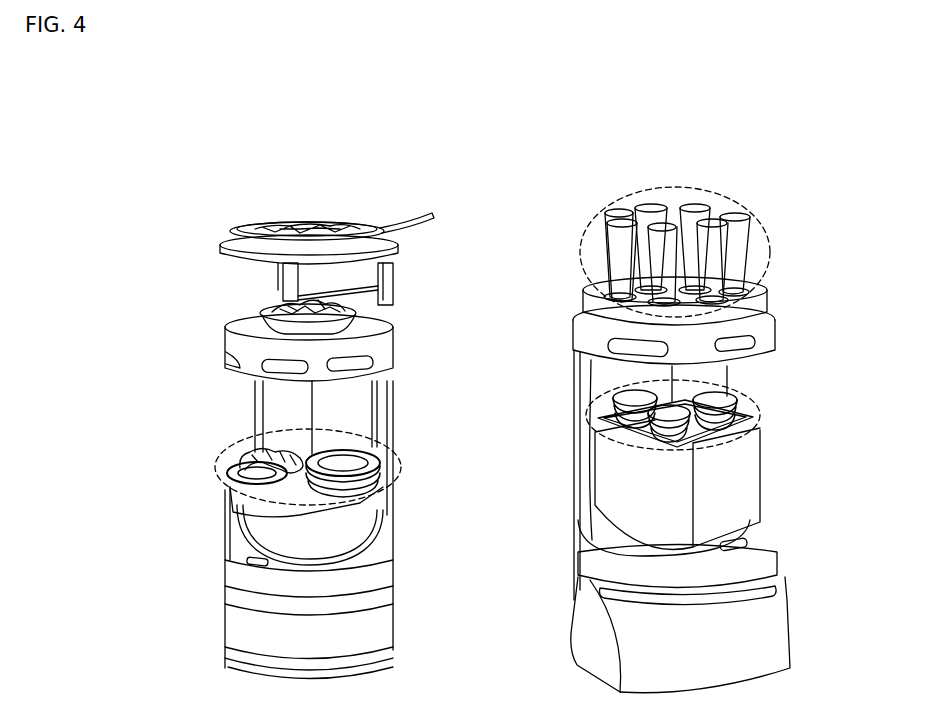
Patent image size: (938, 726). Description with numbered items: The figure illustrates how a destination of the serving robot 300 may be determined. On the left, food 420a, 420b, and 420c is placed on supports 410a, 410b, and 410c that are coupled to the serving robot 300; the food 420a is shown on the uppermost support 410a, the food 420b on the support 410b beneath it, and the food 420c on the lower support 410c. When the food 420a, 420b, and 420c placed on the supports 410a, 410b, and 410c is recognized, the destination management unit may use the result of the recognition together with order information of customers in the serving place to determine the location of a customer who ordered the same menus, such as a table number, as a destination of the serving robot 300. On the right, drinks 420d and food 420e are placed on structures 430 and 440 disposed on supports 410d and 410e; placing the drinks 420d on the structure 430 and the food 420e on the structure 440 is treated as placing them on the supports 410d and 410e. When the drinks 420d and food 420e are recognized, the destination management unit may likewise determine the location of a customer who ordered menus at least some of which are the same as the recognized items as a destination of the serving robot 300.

The serving robot 300 is at (161, 106).
The support 410a is at (230, 232).
The food 420a is at (330, 222).
The support 410b is at (227, 323).
The food 420b is at (277, 304).
The support 410c is at (240, 545).
The food 420c is at (218, 457).
The support 410d is at (770, 303).
The drinks 420d is at (757, 220).
The structure 430 is at (588, 302).
The support 410e is at (750, 527).
The food 420e is at (760, 397).
The structure 440 is at (613, 482).